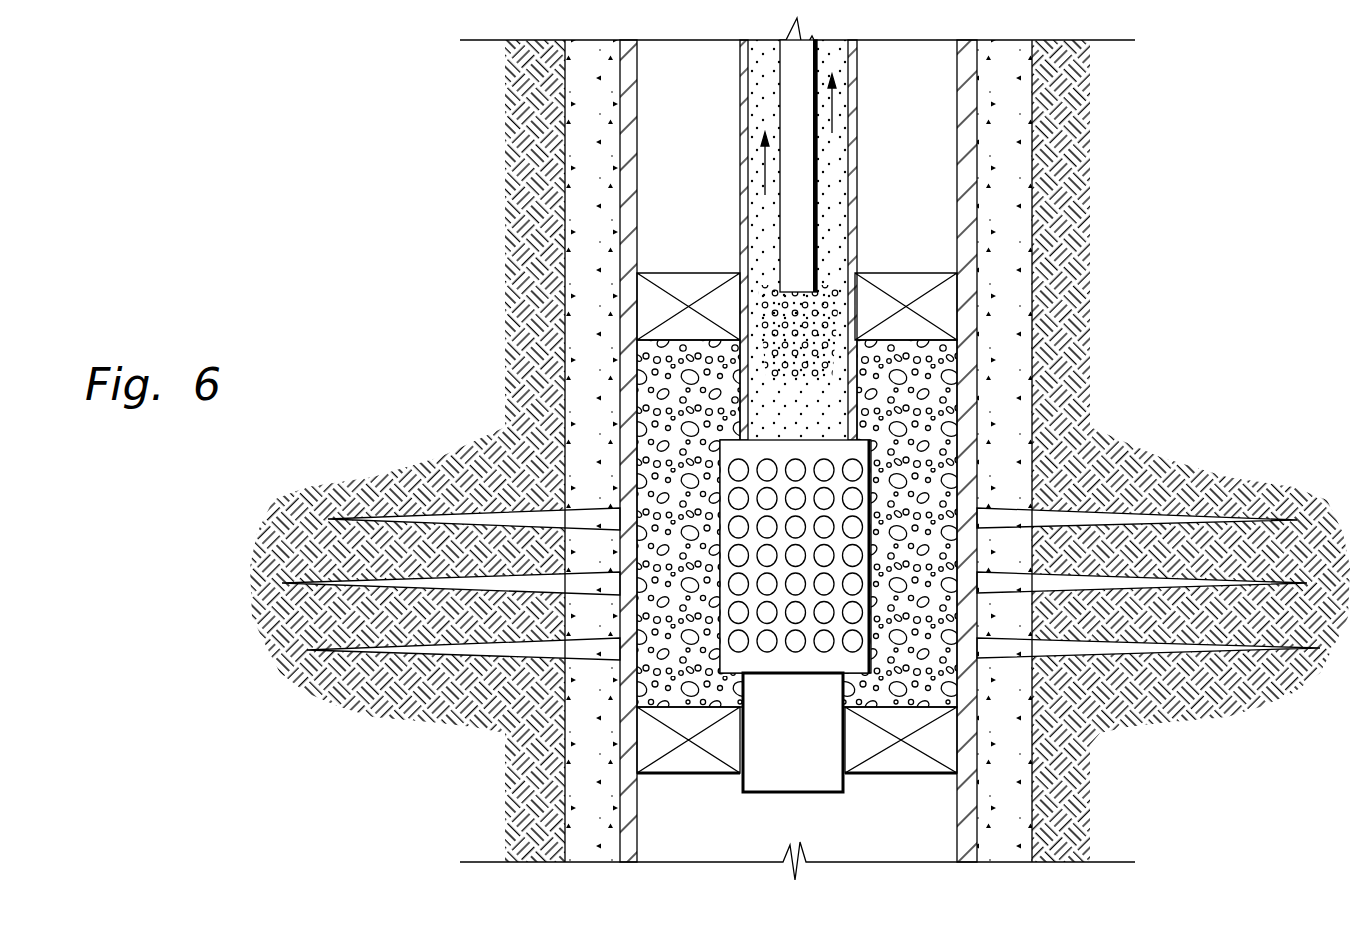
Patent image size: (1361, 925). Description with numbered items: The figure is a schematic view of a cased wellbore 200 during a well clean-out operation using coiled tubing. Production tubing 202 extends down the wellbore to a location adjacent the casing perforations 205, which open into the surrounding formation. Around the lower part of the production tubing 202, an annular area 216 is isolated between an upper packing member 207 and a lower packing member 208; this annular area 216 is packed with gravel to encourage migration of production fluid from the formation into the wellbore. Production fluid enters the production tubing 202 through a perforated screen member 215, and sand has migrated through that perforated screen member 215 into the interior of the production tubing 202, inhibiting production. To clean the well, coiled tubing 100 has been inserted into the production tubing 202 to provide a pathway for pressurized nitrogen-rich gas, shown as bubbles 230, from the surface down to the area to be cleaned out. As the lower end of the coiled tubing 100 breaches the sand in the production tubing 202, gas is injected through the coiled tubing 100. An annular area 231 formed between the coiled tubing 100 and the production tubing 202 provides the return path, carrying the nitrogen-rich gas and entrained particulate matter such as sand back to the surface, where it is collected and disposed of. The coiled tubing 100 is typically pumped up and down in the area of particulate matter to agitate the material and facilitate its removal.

The coiled tubing 100 is at (795, 99).
The cased wellbore 200 is at (800, 449).
The production tubing 202 is at (858, 148).
The casing perforations 205 is at (1135, 520).
The upper packing member 207 is at (900, 287).
The lower packing member 208 is at (897, 757).
The perforated screen member 215 is at (797, 667).
The annular area 216 is at (927, 415).
The bubbles of pressurized nitrogen rich gas 230 is at (783, 332).
The annular area between coiled tubing and production tubing 231 is at (837, 198).